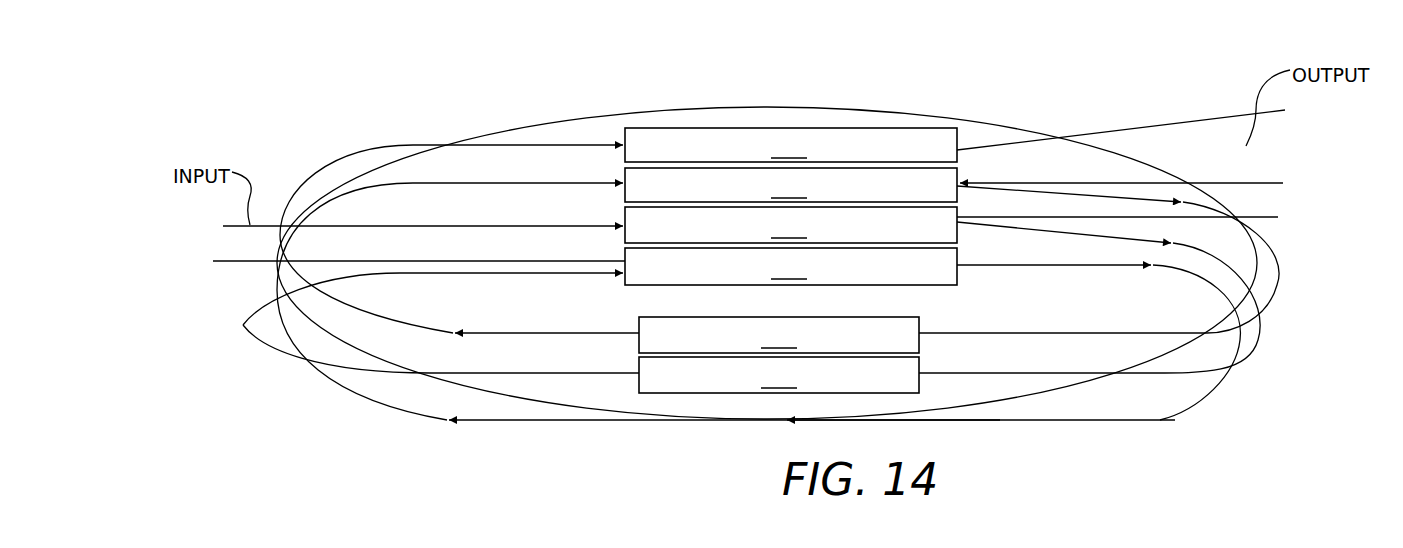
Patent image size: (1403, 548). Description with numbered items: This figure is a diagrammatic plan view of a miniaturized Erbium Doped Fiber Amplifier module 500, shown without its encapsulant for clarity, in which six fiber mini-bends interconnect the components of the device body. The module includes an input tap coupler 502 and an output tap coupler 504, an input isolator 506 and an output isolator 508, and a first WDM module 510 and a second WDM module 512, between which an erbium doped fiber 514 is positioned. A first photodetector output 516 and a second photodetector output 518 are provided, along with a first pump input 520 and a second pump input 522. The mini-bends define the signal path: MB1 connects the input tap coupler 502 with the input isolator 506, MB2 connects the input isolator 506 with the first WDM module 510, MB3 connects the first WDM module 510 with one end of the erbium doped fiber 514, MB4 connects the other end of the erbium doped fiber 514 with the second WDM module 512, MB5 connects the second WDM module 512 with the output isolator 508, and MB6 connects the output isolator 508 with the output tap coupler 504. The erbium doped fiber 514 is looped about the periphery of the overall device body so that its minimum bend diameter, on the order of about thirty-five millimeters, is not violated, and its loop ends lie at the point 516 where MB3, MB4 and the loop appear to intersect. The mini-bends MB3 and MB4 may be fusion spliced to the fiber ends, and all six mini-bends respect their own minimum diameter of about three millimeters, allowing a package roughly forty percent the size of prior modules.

The EDFA module 500 is at (1005, 70).
The input tap coupler 502 is at (898, 225).
The output tap coupler 504 is at (685, 145).
The input isolator 506 is at (785, 375).
The output isolator 508 is at (831, 335).
The first WDM module 510 is at (775, 266).
The second WDM module 512 is at (797, 185).
The erbium doped fiber 514 is at (760, 119).
The first photodetector output 516 is at (1257, 217).
The second photodetector output 518 is at (1170, 127).
The first pump input 520 is at (226, 261).
The second pump input 522 is at (1240, 183).
The fiber mini-bend MB1 is at (1260, 333).
The fiber mini-bend MB2 is at (243, 325).
The fiber mini-bend MB3 is at (1220, 402).
The fiber mini-bend MB4 is at (310, 380).
The fiber mini-bend MB5 is at (1277, 283).
The fiber mini-bend MB6 is at (376, 150).